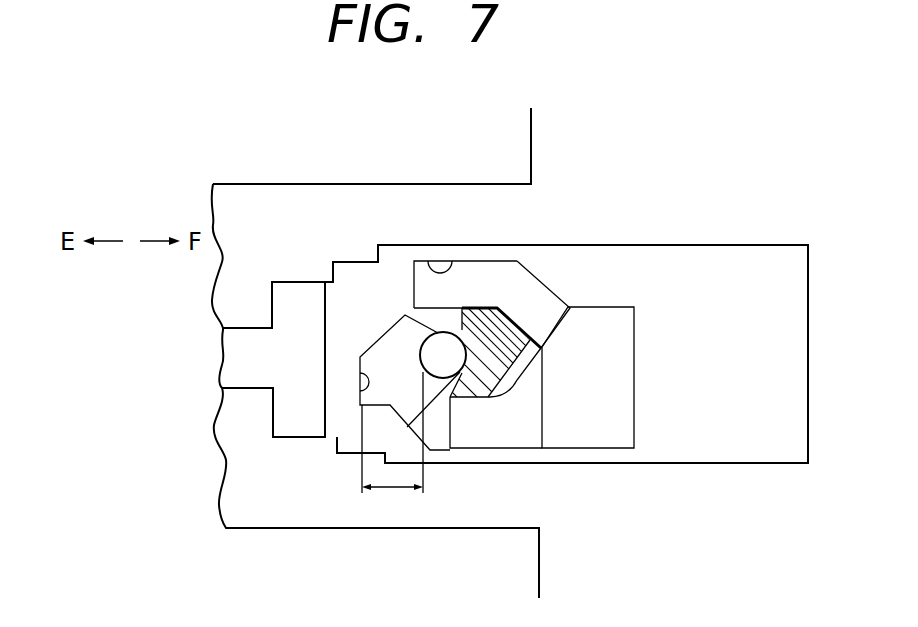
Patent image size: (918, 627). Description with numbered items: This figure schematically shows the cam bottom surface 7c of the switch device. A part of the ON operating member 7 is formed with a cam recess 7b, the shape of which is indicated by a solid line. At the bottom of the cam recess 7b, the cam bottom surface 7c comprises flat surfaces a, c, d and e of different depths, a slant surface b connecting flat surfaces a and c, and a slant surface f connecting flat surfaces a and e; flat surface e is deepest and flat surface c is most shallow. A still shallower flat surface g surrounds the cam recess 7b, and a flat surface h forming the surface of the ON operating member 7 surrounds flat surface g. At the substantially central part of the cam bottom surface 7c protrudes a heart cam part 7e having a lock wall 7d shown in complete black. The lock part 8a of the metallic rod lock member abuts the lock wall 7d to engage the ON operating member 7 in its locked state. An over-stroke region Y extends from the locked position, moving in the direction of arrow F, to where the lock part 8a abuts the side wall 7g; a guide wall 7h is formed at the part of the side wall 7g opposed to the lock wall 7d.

The ON operating member 7 is at (310, 174).
The cam recess 7b is at (434, 265).
The cam bottom surface 7c is at (506, 270).
The lock wall 7d is at (413, 310).
The heart cam part 7e is at (478, 308).
The side wall 7g is at (362, 398).
The guide wall 7h is at (388, 335).
The lock part 8a is at (437, 348).